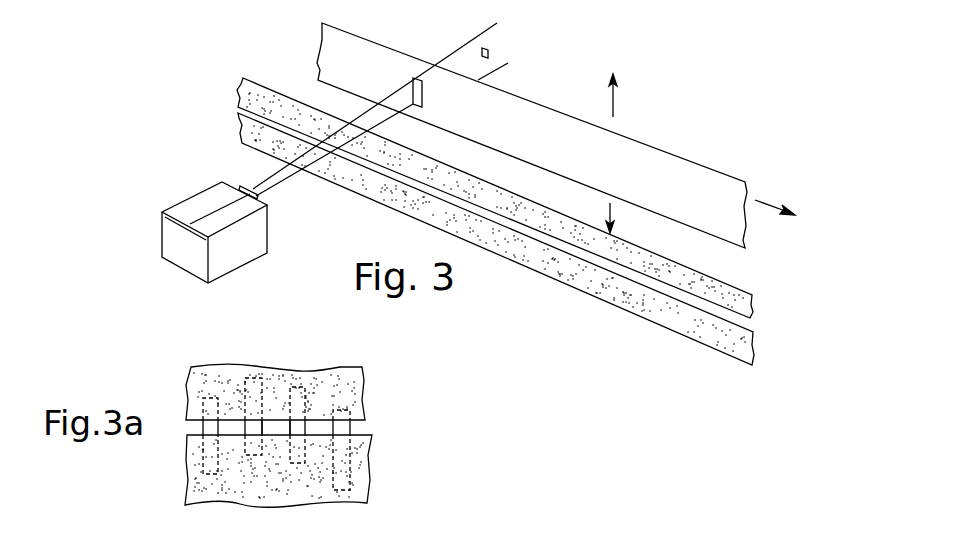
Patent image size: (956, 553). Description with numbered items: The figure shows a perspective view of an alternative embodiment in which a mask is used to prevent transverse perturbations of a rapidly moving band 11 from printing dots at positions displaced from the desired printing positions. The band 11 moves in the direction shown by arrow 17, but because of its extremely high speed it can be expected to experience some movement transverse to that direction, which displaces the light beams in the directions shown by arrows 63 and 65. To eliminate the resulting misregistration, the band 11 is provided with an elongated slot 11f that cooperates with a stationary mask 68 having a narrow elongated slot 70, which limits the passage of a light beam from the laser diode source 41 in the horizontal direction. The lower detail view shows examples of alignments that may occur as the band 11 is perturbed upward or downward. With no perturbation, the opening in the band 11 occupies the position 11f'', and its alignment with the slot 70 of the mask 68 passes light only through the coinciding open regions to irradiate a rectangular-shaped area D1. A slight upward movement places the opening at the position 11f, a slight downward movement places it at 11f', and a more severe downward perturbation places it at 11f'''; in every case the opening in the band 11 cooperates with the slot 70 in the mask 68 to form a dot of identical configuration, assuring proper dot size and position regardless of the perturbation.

In FIG. 3, the band 11 is at (658, 148).
In FIG. 3, the elongated slot 11f is at (401, 55).
In FIG. 3A, the elongated slot 11f is at (175, 436).
In FIG. 3A, the slot position 11f' is at (277, 393).
In FIG. 3A, the slot position 11f'' is at (332, 398).
In FIG. 3A, the fourth slit 11f''' is at (391, 450).
In FIG. 3, the arrow 17 is at (770, 200).
In FIG. 3, the laser diode source 41 is at (188, 197).
In FIG. 3, the arrow 63 is at (615, 102).
In FIG. 3, the arrow 65 is at (610, 207).
In FIG. 3, the stationary mask 68 is at (592, 283).
In FIG. 3A, the stationary mask 68 is at (417, 388).
In FIG. 3, the narrow elongated slot 70 is at (672, 290).
In FIG. 3A, the narrow elongated slot 70 is at (365, 428).
In FIG. 3A, the rectangular-shaped area D1 is at (289, 428).